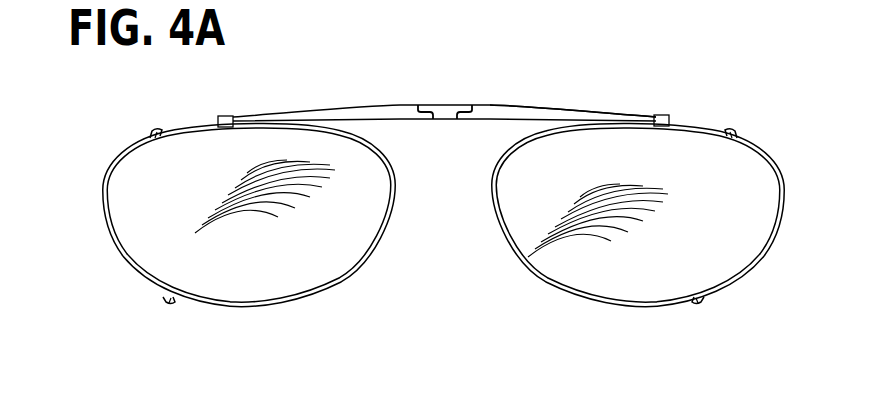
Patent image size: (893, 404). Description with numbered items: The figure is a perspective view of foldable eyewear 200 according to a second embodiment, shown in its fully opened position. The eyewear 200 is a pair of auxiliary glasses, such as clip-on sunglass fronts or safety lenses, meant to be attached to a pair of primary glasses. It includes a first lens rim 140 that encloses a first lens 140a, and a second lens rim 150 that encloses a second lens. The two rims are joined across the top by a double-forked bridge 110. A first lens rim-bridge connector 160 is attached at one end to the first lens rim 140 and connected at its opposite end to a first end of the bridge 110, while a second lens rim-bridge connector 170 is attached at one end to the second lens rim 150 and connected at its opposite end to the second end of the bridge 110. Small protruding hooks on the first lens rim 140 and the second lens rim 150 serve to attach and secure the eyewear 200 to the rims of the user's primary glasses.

The foldable eyewear 200 is at (67, 93).
The double-forked bridge 110 is at (443, 104).
The first lens rim 140 is at (127, 266).
The first lens 140a is at (281, 272).
The second lens rim 150 is at (726, 288).
The first lens rim-bridge connector 160 is at (335, 109).
The second lens rim-bridge connector 170 is at (532, 107).